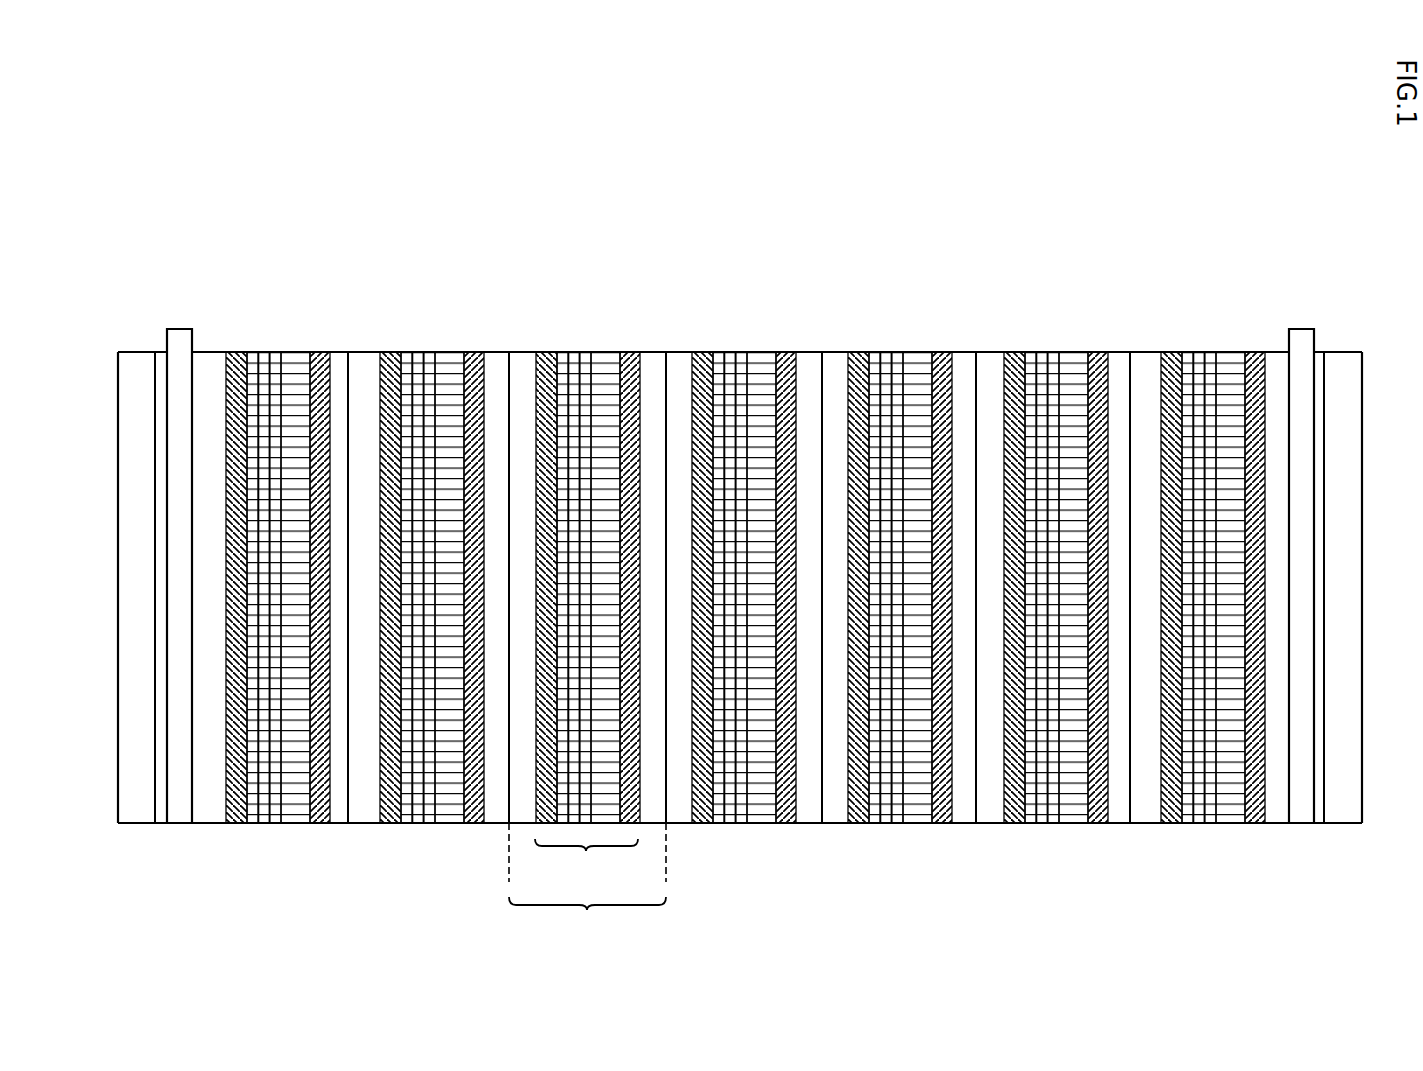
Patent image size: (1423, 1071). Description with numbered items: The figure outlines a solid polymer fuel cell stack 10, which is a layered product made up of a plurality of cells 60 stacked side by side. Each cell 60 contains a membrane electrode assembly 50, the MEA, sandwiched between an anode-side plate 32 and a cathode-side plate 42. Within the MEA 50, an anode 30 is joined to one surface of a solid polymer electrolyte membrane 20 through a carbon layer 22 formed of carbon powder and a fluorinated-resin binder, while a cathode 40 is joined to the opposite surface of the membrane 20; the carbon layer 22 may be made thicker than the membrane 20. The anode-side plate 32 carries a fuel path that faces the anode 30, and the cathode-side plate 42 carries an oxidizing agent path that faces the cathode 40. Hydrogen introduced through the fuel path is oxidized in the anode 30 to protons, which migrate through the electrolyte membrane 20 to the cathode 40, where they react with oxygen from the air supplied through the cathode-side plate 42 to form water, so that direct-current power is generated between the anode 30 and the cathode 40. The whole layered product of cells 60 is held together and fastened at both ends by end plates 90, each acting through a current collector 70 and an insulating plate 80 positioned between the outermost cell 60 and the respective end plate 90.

The solid polymer fuel cell stack 10 is at (840, 280).
The solid polymer electrolyte membrane 20 is at (603, 352).
The carbon layer 22 is at (568, 352).
The anode 30 is at (546, 353).
The anode-side plate 32 is at (520, 353).
The cathode 40 is at (630, 352).
The cathode-side plate 42 is at (658, 352).
The membrane electrode assembly 50 is at (586, 861).
The cell 60 is at (587, 884).
The current collector 70 is at (190, 346).
The insulating plate 80 is at (160, 357).
The end plate 90 is at (135, 353).